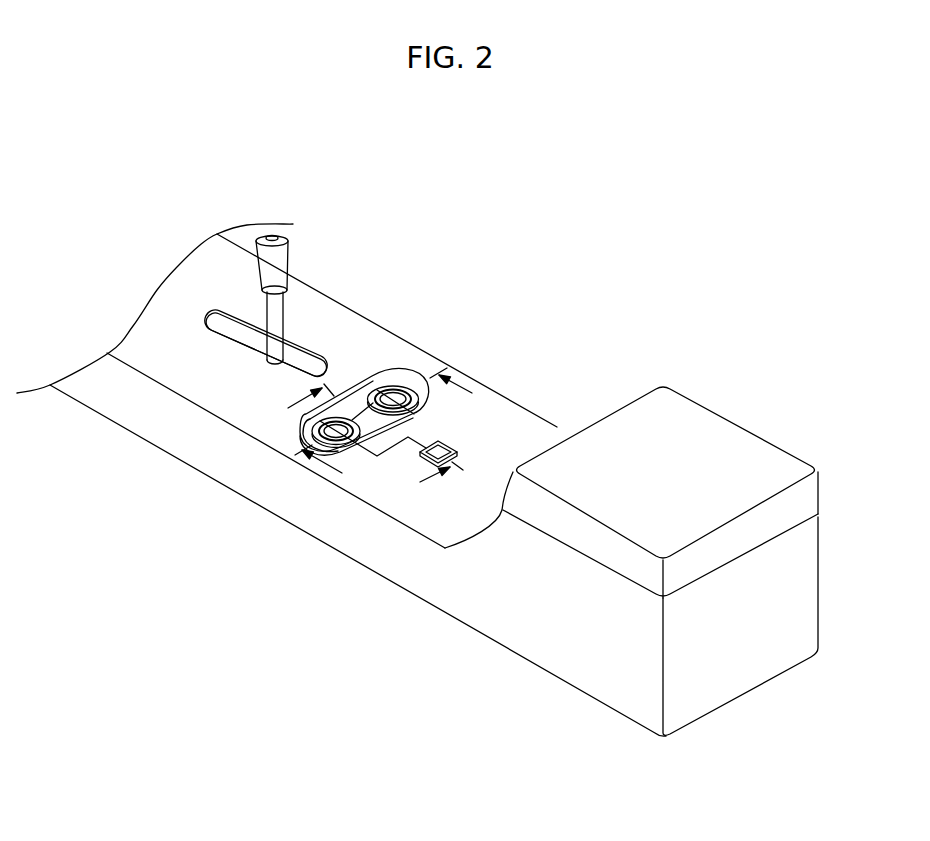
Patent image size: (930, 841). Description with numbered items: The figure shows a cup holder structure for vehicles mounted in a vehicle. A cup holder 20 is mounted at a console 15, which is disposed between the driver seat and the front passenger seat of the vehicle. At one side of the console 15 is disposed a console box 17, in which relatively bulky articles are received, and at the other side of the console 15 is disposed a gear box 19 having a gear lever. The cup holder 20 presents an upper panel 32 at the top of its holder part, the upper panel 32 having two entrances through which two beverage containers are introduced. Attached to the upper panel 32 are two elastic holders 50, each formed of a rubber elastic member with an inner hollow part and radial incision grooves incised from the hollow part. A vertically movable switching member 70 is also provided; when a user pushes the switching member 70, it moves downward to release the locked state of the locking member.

The console 15 is at (390, 550).
The console box 17 is at (740, 363).
The gear box 19 is at (378, 258).
The cup holder 20 is at (463, 350).
The upper panel 32 is at (370, 419).
The elastic holder 50 is at (392, 387).
The switching member 70 is at (457, 437).